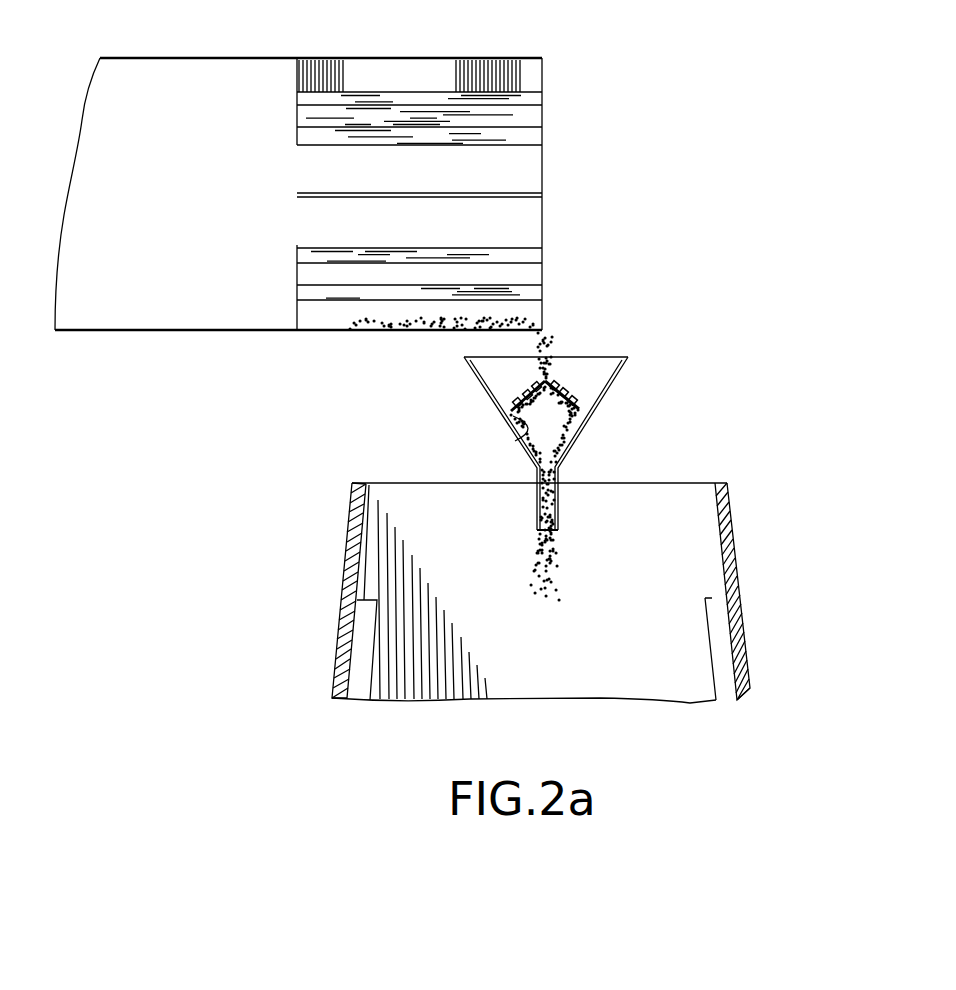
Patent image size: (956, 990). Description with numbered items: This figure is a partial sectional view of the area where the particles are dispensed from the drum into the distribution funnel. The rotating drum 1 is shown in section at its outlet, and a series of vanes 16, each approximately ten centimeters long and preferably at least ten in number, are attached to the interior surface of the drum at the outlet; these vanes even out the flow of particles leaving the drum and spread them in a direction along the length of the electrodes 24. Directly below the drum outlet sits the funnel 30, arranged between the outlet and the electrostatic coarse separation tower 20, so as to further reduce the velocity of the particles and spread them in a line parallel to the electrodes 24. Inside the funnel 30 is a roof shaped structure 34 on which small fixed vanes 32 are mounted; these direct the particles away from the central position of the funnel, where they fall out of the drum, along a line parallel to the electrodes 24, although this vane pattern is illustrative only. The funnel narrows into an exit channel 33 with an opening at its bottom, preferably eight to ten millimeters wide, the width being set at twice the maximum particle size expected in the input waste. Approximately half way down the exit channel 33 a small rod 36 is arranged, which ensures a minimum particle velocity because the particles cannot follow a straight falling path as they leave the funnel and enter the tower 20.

The rotating drum 1 is at (410, 59).
The vanes 16 is at (515, 90).
The electrostatic coarse separation tower 20 is at (738, 572).
The electrodes 24 is at (360, 660).
The funnel 30 is at (607, 394).
The small fixed vanes 32 is at (550, 381).
The exit channel 33 is at (533, 527).
The roof shaped structure 34 is at (516, 439).
The small rod 36 is at (547, 498).